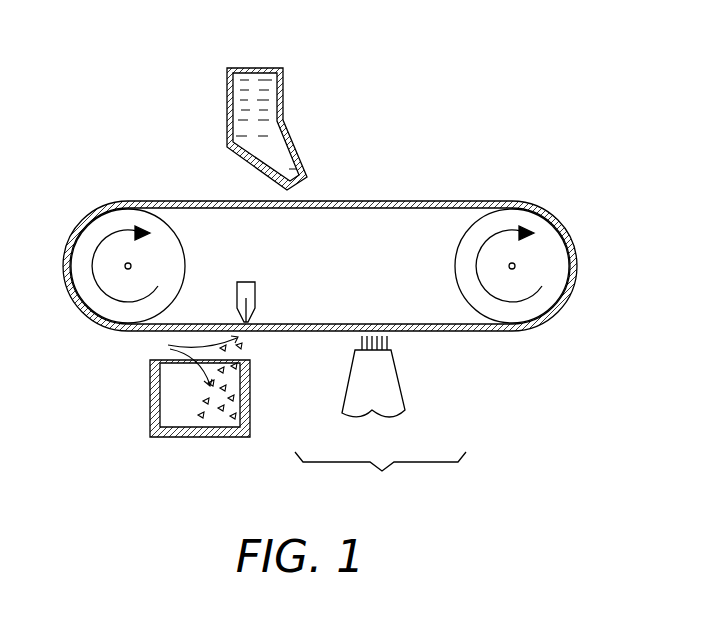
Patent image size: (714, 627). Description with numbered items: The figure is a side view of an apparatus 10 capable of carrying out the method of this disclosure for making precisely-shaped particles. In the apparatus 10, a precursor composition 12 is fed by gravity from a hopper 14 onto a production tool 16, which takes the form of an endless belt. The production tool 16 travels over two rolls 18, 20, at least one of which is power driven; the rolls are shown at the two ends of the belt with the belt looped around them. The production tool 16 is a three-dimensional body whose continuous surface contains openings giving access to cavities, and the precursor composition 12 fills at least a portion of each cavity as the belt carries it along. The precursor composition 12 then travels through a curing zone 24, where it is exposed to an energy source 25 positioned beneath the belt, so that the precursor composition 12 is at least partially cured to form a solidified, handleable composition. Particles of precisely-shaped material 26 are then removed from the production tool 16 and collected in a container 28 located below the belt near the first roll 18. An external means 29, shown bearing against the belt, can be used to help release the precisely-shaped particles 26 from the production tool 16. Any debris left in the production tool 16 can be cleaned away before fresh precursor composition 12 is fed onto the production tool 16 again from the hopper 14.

The apparatus 10 is at (383, 164).
The precursor composition 12 is at (250, 79).
The hopper 14 is at (283, 80).
The production tool 16 is at (210, 206).
The roll 18 is at (92, 298).
The roll 20 is at (462, 291).
The curing zone 24 is at (380, 475).
The energy source 25 is at (373, 396).
The particles of precisely-shaped material 26 is at (188, 376).
The container 28 is at (206, 438).
The external means 29 is at (248, 301).